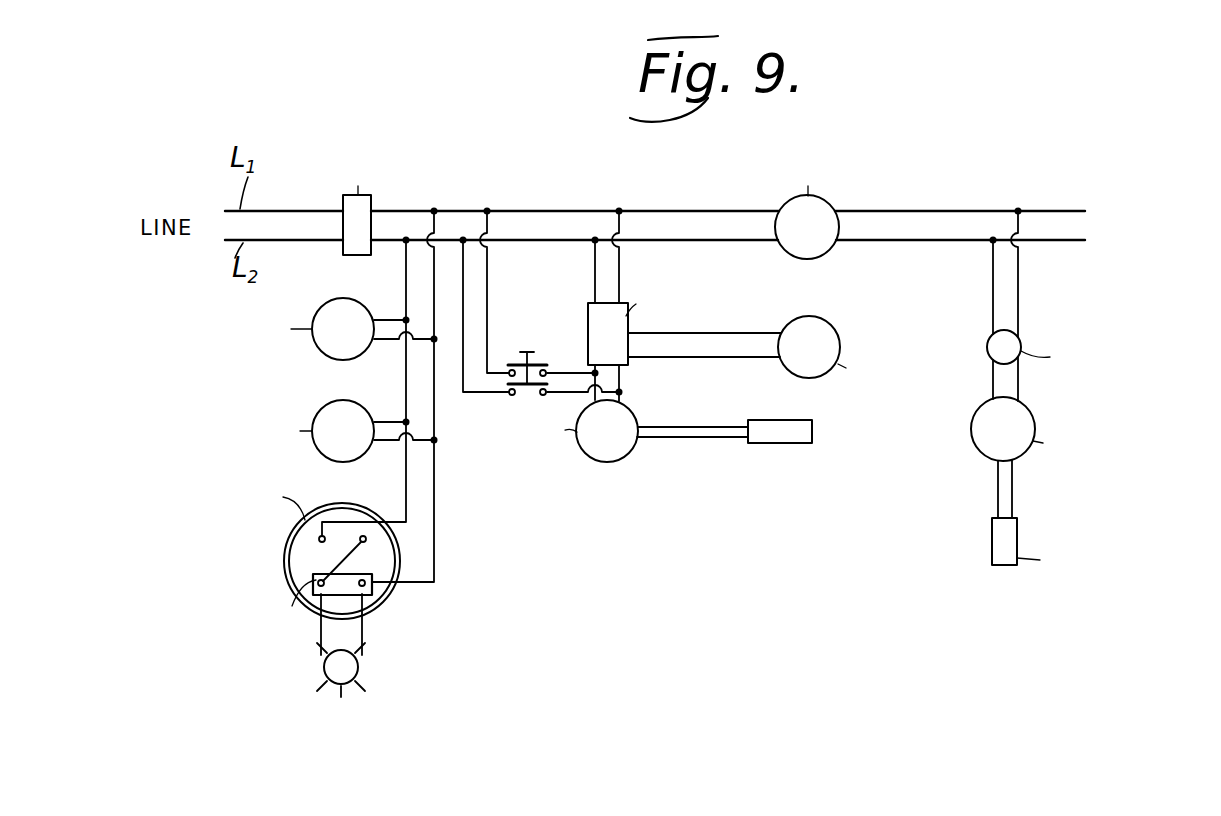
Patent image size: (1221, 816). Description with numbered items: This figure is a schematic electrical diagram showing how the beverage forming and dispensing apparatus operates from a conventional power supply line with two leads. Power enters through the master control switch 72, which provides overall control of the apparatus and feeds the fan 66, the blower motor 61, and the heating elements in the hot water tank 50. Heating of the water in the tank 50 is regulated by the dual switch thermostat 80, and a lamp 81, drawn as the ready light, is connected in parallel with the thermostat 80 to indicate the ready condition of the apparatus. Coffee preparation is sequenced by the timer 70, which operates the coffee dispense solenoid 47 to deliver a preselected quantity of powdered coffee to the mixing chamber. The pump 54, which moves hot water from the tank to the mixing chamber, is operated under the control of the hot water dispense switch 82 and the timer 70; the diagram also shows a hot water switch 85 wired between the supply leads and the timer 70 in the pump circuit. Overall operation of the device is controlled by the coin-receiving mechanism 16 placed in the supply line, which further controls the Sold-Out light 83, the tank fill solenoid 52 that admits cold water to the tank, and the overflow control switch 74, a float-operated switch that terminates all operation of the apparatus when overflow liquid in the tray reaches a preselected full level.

The master control switch 72 is at (370, 206).
The coin-receiving mechanism 16 is at (818, 211).
The fan 66 is at (350, 311).
The blower motor 61 is at (350, 411).
The hot water switch 85 is at (539, 370).
The sequence timer 70 is at (630, 362).
The coffee dispense solenoid 47 is at (811, 325).
The hot water dispense switch 82 is at (795, 427).
The pump 54 is at (605, 450).
The hot water tank 50 is at (384, 600).
The dual switch thermostat 80 is at (332, 596).
The lamp 81 is at (347, 667).
The Sold-Out light 83 is at (1005, 335).
The tank fill solenoid 52 is at (990, 446).
The overflow control switch 74 is at (1000, 546).